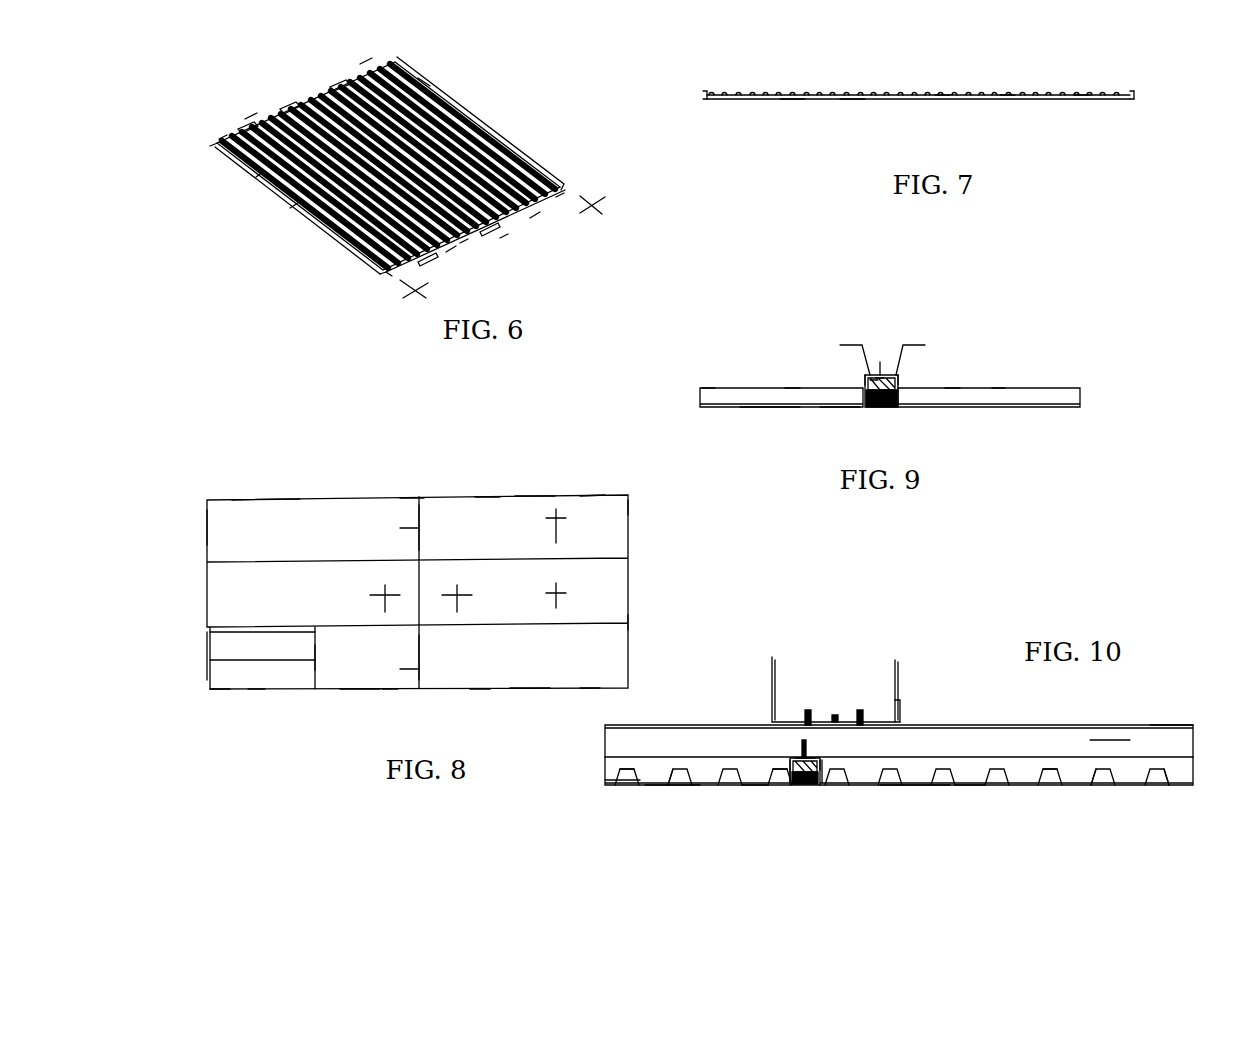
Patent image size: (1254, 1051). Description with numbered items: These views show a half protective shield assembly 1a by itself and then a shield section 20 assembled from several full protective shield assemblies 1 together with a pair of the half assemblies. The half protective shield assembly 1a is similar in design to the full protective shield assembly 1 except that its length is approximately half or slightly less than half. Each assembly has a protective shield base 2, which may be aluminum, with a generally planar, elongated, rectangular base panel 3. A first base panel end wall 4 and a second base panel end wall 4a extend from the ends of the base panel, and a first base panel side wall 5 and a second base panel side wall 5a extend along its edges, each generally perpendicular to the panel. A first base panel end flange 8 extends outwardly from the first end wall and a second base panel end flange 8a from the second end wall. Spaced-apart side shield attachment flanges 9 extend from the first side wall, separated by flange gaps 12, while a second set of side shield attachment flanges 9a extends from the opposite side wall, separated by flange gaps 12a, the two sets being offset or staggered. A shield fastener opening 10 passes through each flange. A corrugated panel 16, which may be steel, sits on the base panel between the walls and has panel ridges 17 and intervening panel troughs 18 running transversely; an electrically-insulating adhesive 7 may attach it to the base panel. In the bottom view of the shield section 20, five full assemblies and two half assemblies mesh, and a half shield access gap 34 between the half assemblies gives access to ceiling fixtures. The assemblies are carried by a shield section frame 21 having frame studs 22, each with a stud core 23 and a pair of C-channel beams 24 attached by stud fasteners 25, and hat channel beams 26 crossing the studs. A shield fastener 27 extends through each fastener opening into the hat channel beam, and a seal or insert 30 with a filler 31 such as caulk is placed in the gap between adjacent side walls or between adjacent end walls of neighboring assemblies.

In FIG. 9, the protective shield assembly 1 is at (743, 373).
In FIG. 8, the protective shield assembly 1 is at (206, 588).
In FIG. 10, the protective shield assembly 1 is at (592, 790).
In FIG. 6, the half protective shield assembly 1a is at (287, 62).
In FIG. 7, the half protective shield assembly 1a is at (867, 50).
In FIG. 10, the half protective shield assembly 1a is at (1190, 790).
In FIG. 6, the protective shield base 2 is at (208, 147).
In FIG. 7, the protective shield base 2 is at (792, 102).
In FIG. 9, the protective shield base 2 is at (767, 410).
In FIG. 10, the protective shield base 2 is at (663, 790).
In FIG. 7, the base panel 3 is at (853, 99).
In FIG. 9, the base panel 3 is at (838, 407).
In FIG. 10, the base panel 3 is at (733, 785).
In FIG. 7, the first base panel end wall 4 is at (705, 99).
In FIG. 10, the first base panel end wall 4 is at (793, 763).
In FIG. 10, the second base panel end wall 4a is at (823, 767).
In FIG. 6, the first base panel side wall 5 is at (223, 140).
In FIG. 9, the first base panel side wall 5 is at (903, 377).
In FIG. 9, the second base panel side wall 5a is at (860, 377).
In FIG. 6, the electrically-insulating adhesive 7 is at (420, 293).
In FIG. 6, the first base panel end flange 8 is at (343, 241).
In FIG. 7, the first base panel end flange 8 is at (705, 90).
In FIG. 8, the first base panel end flange 8 is at (626, 508).
In FIG. 10, the first base panel end flange 8 is at (807, 760).
In FIG. 6, the second base panel end flange 8a is at (510, 150).
In FIG. 8, the second base panel end flange 8a is at (202, 519).
In FIG. 10, the second base panel end flange 8a is at (820, 757).
In FIG. 6, the side shield attachment flange 9 is at (363, 62).
In FIG. 9, the side shield attachment flange 9 is at (890, 373).
In FIG. 8, the side shield attachment flange 9 is at (565, 528).
In FIG. 6, the side shield attachment flange 9a is at (390, 273).
In FIG. 9, the side shield attachment flange 9a is at (873, 370).
In FIG. 8, the side shield attachment flange 9a is at (412, 497).
In FIG. 6, the shield fastener opening 10 is at (347, 75).
In FIG. 8, the shield fastener opening 10 is at (385, 612).
In FIG. 6, the flange gap 12 is at (313, 80).
In FIG. 8, the flange gap 12 is at (256, 692).
In FIG. 6, the flange gap 12a is at (450, 250).
In FIG. 8, the flange gap 12a is at (294, 490).
In FIG. 6, the corrugated panel 16 is at (293, 207).
In FIG. 7, the corrugated panel 16 is at (942, 90).
In FIG. 9, the corrugated panel 16 is at (790, 383).
In FIG. 10, the corrugated panel 16 is at (627, 775).
In FIG. 6, the panel ridge 17 is at (260, 177).
In FIG. 7, the panel ridge 17 is at (1008, 95).
In FIG. 9, the panel ridge 17 is at (710, 387).
In FIG. 10, the panel ridge 17 is at (670, 783).
In FIG. 6, the panel trough 18 is at (437, 100).
In FIG. 7, the panel trough 18 is at (1083, 95).
In FIG. 10, the panel trough 18 is at (780, 785).
In FIG. 8, the shield section 20 is at (348, 461).
In FIG. 10, the shield section 20 is at (1153, 702).
In FIG. 10, the shield section frame 21 is at (1155, 720).
In FIG. 10, the frame stud 22 is at (762, 692).
In FIG. 10, the stud core 23 is at (895, 673).
In FIG. 10, the C-channel beam 24 is at (900, 702).
In FIG. 10, the stud fastener 25 is at (860, 710).
In FIG. 9, the hat channel beam 26 is at (848, 345).
In FIG. 10, the hat channel beam 26 is at (1113, 733).
In FIG. 9, the shield fastener 27 is at (878, 370).
In FIG. 10, the shield fastener 27 is at (800, 750).
In FIG. 9, the seal or insert 30 is at (887, 407).
In FIG. 10, the seal or insert 30 is at (813, 785).
In FIG. 9, the filler 31 is at (873, 407).
In FIG. 10, the filler 31 is at (802, 785).
In FIG. 8, the half shield access gap 34 is at (315, 657).